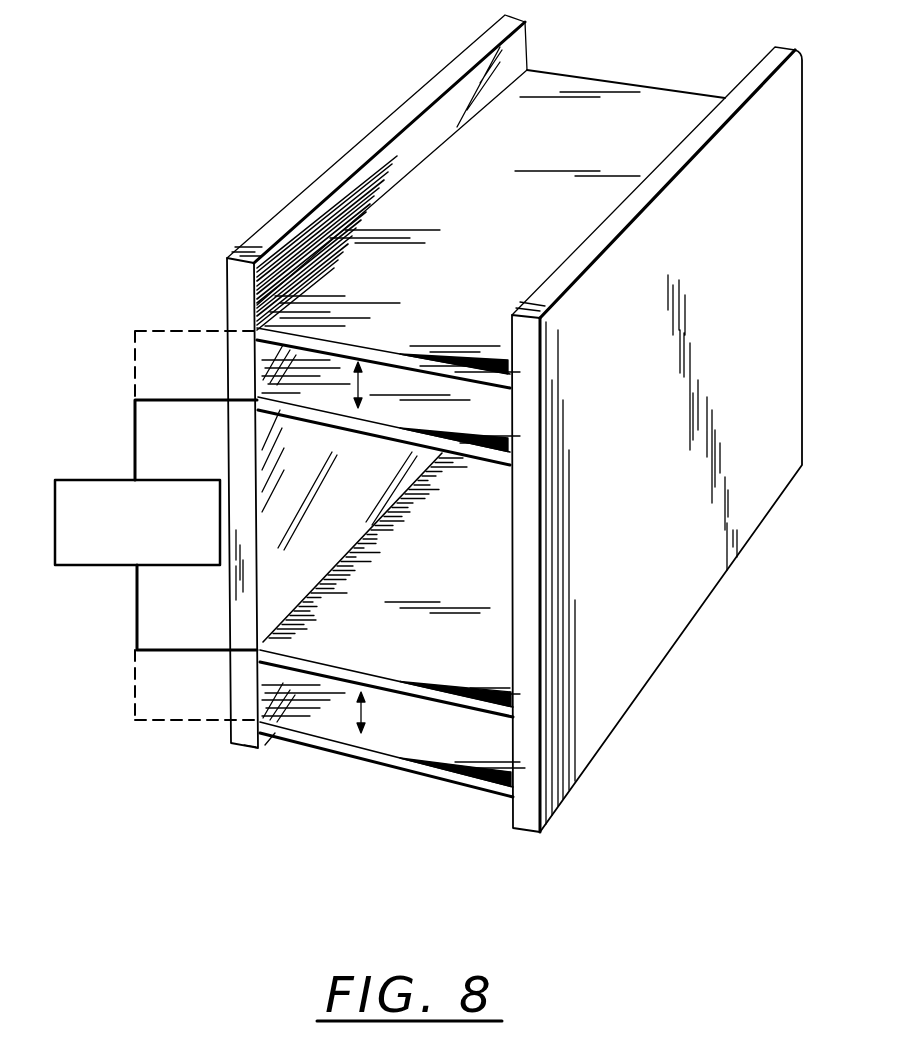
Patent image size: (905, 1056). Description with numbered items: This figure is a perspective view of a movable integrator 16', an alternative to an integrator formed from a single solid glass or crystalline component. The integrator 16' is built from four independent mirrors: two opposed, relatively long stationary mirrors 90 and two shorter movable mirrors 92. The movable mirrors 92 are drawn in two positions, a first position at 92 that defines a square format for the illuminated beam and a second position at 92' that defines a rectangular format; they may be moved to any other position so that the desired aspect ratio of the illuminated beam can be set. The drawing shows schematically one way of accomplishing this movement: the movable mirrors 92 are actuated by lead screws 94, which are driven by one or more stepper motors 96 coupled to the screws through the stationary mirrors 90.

The movable integrator 16' is at (507, 423).
The stationary mirrors 90 is at (238, 612).
The movable mirrors 92 is at (447, 592).
The movable mirrors in second position 92' is at (441, 569).
The lead screws 94 is at (135, 436).
The stepper motor 96 is at (105, 480).